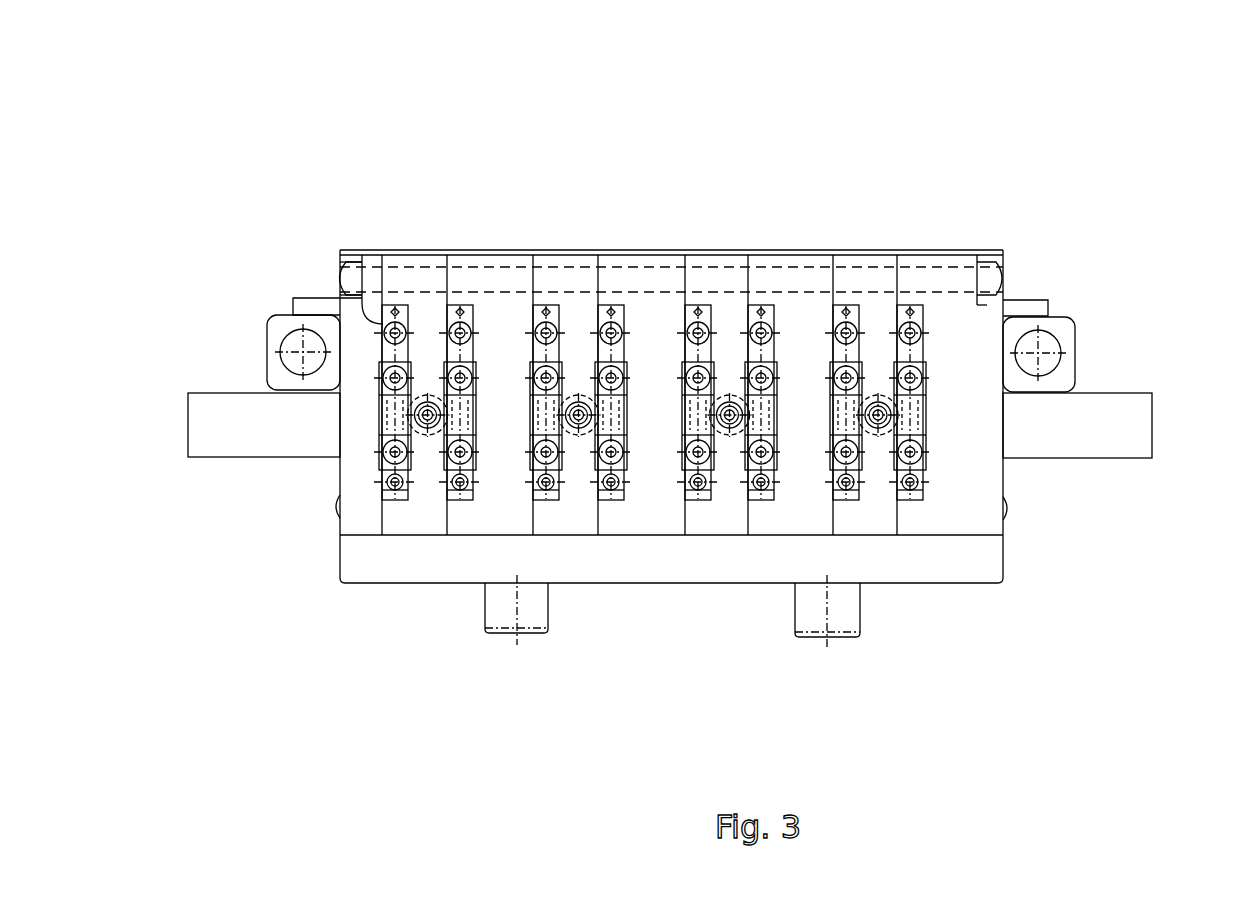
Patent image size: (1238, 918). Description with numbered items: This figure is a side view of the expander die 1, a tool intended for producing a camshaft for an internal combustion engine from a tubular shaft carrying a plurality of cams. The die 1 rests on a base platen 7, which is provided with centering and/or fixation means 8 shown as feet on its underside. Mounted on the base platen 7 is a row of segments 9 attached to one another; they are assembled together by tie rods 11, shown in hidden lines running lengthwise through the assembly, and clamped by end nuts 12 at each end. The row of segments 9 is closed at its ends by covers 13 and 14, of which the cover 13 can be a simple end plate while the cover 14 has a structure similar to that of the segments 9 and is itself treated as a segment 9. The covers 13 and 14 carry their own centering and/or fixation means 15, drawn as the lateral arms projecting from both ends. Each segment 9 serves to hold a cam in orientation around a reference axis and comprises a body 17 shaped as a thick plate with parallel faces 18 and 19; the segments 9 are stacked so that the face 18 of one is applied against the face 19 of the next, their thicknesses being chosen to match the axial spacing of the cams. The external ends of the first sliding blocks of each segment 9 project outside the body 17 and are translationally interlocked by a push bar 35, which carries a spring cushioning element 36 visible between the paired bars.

The expander die 1 is at (963, 110).
The base platen 7 is at (718, 557).
The centering and/or fixation means 8 is at (528, 613).
The segment 9 is at (503, 307).
The tie rod 11 is at (797, 277).
The end nut 12 is at (360, 252).
The cover 13 is at (367, 472).
The cover 14 is at (975, 488).
The centering and/or fixation means 15 is at (258, 442).
The body 17 is at (648, 307).
The face 18 is at (350, 327).
The face 19 is at (598, 282).
The push bar 35 is at (858, 315).
The spring cushioning element 36 is at (458, 408).